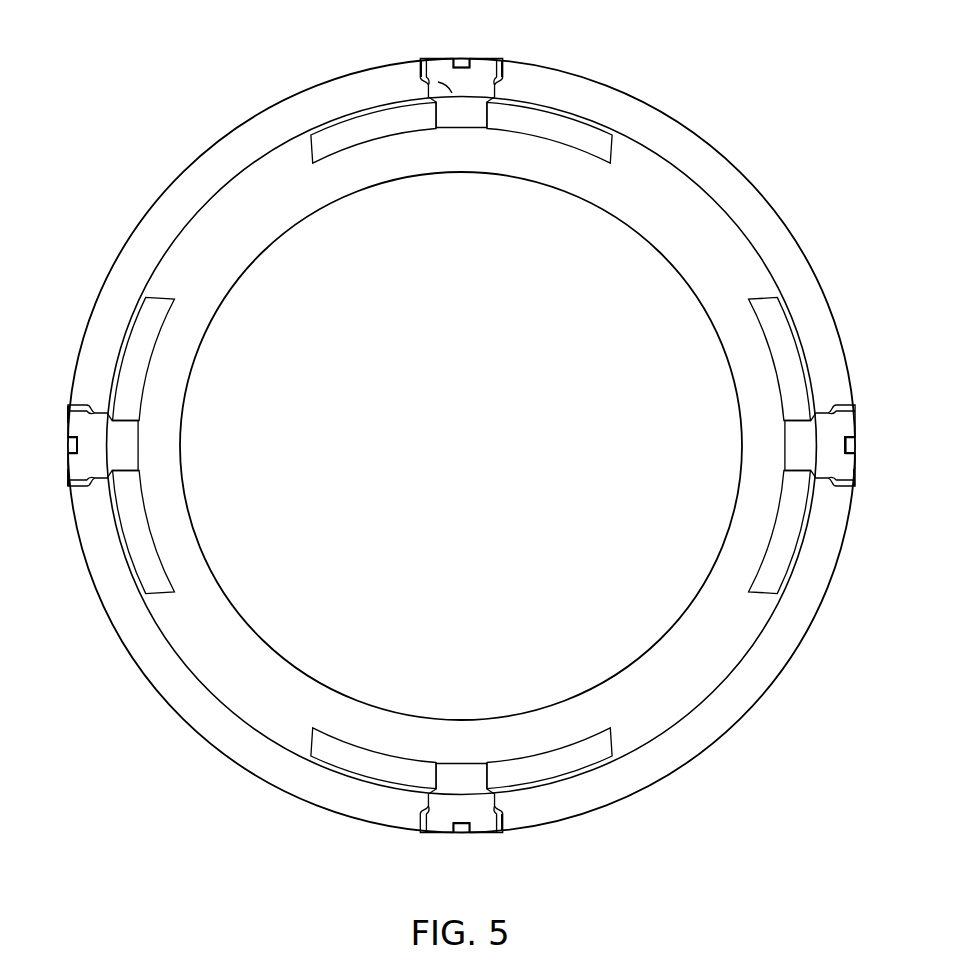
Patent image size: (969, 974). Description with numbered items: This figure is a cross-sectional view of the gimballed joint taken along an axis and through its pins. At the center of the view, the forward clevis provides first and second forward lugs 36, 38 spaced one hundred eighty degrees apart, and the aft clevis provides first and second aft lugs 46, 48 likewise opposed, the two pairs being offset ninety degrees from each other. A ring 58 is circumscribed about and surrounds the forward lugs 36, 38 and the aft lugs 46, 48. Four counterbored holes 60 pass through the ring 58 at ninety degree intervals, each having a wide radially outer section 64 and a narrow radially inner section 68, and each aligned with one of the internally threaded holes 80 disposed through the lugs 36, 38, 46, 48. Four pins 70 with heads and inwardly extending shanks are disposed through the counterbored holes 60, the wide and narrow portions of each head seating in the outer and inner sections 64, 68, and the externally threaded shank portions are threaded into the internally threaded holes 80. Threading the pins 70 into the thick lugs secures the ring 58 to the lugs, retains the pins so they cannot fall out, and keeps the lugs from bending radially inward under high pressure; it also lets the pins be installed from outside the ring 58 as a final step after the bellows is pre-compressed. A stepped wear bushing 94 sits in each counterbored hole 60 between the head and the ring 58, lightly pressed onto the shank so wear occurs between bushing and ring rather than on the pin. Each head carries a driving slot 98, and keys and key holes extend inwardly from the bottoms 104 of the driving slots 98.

The first forward lug 36 is at (547, 121).
The second forward lug 38 is at (533, 773).
The first aft lug 46 is at (792, 526).
The second aft lug 48 is at (139, 360).
The ring 58 is at (740, 166).
The counterbored holes 60 is at (502, 60).
The wide radially outer section 64 is at (433, 58).
The narrow radially inner section 68 is at (458, 100).
The pins 70 is at (477, 56).
The internally threaded holes 80 is at (487, 119).
The wear bushing 94 is at (83, 406).
The driving slot 98 is at (67, 447).
The bottoms of the driving slots 104 is at (459, 831).